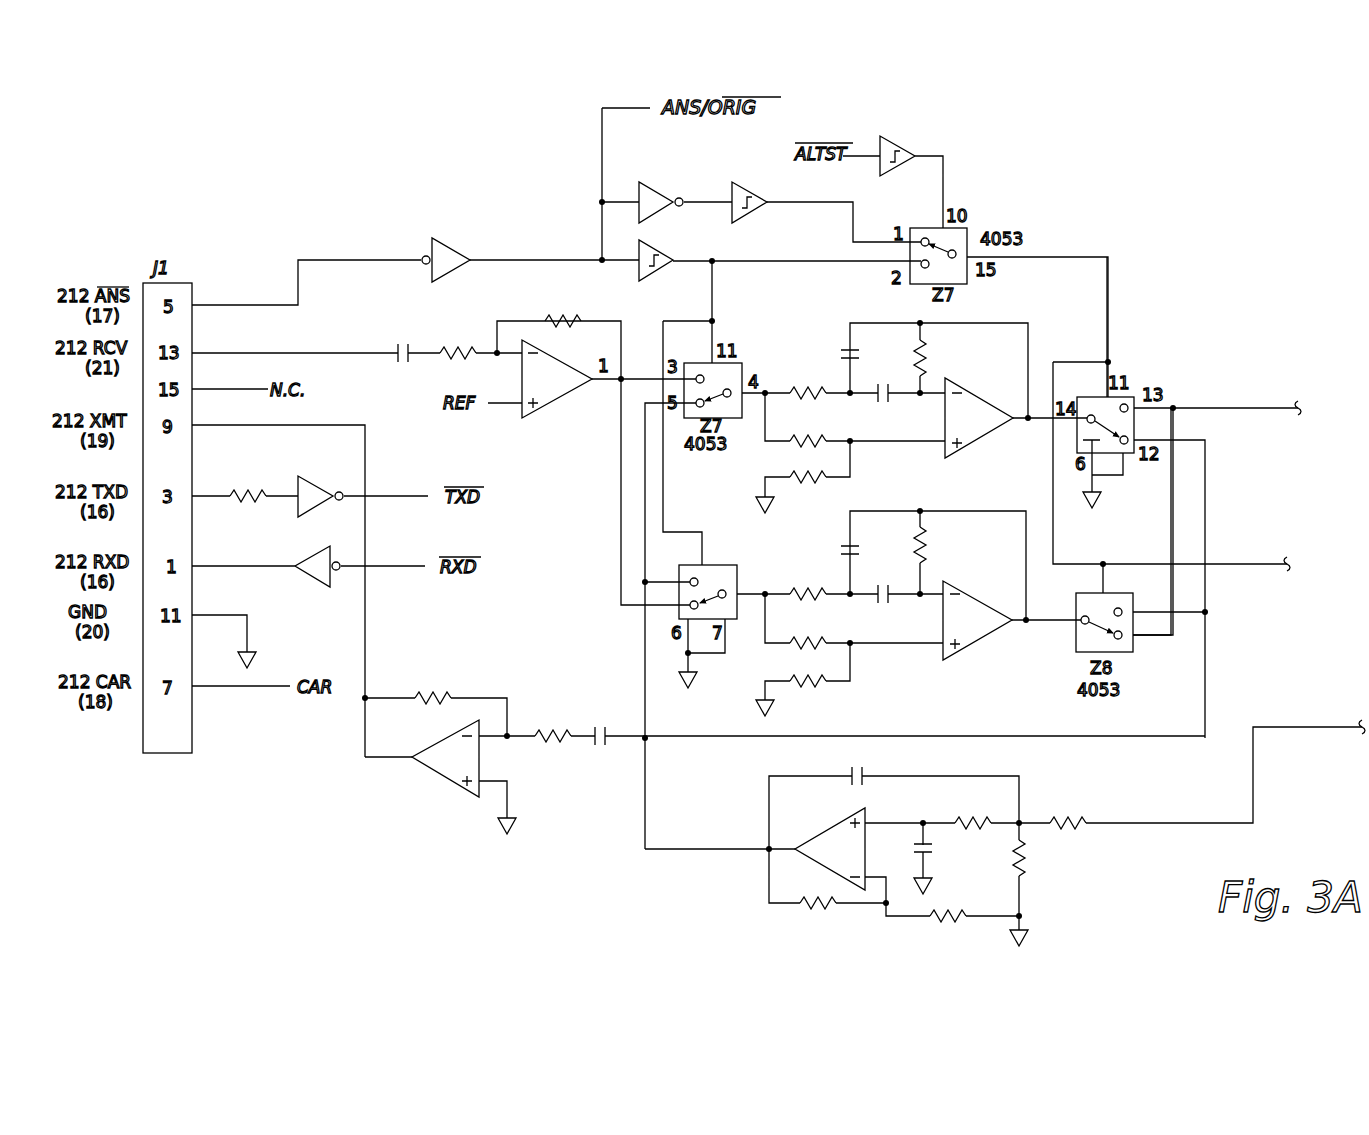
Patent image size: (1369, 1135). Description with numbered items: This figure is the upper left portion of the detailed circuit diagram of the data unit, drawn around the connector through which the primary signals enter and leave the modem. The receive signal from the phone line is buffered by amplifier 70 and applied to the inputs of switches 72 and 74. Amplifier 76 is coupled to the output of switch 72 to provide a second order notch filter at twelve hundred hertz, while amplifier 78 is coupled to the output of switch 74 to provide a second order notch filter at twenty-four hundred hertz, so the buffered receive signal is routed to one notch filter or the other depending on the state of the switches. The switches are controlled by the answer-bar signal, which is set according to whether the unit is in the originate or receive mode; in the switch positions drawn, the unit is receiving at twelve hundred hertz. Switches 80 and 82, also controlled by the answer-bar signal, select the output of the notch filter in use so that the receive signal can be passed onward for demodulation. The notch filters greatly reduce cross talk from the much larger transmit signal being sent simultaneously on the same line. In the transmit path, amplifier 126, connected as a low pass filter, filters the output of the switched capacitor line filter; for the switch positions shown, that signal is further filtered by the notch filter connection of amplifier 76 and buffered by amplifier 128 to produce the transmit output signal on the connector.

The amplifier 70 is at (541, 418).
The switch 72 is at (736, 363).
The switch 74 is at (738, 578).
The amplifier 76 is at (1000, 436).
The amplifier 78 is at (982, 602).
The switch 80 is at (1128, 397).
The switch 82 is at (1076, 654).
The amplifier 126 is at (822, 832).
The amplifier 128 is at (447, 781).